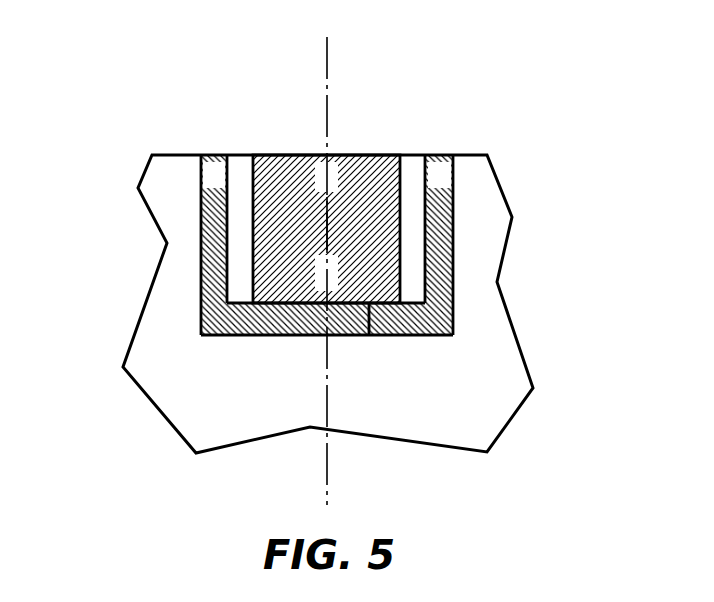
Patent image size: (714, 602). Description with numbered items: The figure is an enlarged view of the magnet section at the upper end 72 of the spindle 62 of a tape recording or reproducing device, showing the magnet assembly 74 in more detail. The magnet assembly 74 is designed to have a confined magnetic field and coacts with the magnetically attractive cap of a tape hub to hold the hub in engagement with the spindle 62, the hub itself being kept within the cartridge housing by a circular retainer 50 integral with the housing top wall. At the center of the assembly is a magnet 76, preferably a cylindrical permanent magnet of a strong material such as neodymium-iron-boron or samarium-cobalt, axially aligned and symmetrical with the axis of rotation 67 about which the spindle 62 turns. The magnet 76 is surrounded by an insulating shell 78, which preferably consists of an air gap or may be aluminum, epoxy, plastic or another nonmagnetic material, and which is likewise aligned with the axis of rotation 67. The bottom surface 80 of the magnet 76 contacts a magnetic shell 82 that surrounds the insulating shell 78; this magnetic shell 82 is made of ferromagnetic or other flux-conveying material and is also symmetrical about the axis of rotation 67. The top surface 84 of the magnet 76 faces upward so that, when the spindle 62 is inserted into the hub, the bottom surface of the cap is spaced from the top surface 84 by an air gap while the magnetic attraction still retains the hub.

The circular retainer 50 is at (285, 281).
The spindle 62 is at (332, 263).
The axis of rotation 67 is at (323, 98).
The upper end 72 is at (497, 363).
The magnet assembly 74 is at (285, 238).
The magnet 76 is at (378, 235).
The insulating shell 78 is at (242, 242).
The bottom surface 80 is at (369, 337).
The magnetic shell 82 is at (220, 337).
The top surface 84 is at (327, 186).